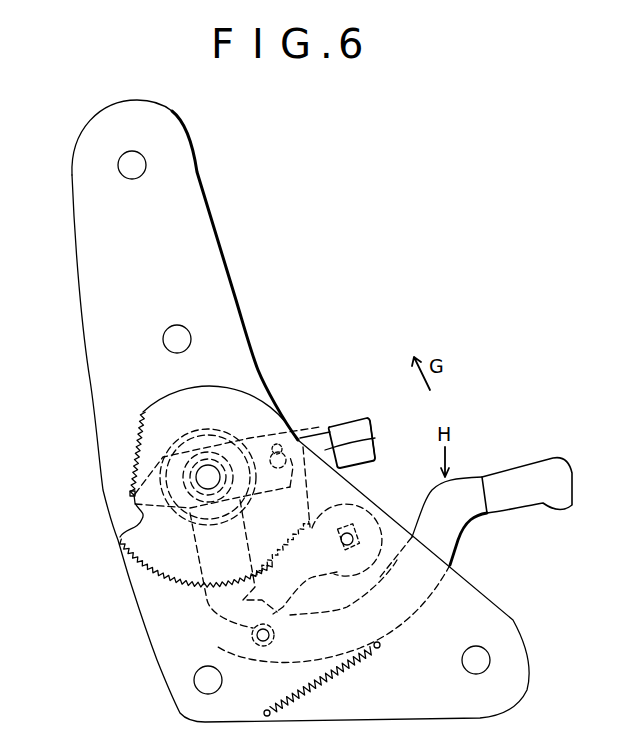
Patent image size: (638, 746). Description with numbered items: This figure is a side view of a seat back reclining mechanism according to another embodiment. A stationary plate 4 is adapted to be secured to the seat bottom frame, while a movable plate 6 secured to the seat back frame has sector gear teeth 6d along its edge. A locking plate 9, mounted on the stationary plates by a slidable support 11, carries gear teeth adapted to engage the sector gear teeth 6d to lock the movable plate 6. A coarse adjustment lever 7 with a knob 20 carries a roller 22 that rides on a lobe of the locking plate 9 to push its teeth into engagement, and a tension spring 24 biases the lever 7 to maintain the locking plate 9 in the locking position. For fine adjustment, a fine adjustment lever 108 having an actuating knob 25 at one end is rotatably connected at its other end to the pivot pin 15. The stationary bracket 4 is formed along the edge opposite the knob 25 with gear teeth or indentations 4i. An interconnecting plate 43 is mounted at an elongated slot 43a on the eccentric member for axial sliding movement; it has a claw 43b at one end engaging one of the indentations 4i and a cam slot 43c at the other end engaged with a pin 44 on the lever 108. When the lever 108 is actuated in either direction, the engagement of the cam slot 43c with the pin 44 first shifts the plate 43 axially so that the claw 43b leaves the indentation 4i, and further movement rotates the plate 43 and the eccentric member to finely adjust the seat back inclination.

The stationary plate 4 is at (170, 657).
The gear teeth or indentations 4i is at (132, 453).
The movable plate 6 is at (213, 266).
The sector gear teeth 6d is at (150, 572).
The coarse adjustment lever 7 is at (463, 530).
The locking plate 9 is at (205, 613).
The slidable support 11 is at (351, 533).
The pivot pin 15 is at (209, 472).
The knob 20 is at (515, 485).
The roller 22 is at (257, 647).
The tension spring 24 is at (330, 690).
The actuating knob 25 is at (376, 454).
The interconnecting plate 43 is at (282, 422).
The elongated slot 43a is at (203, 457).
The claw 43b is at (130, 494).
The cam slot 43c is at (285, 428).
The pin 44 is at (338, 424).
The fine adjustment lever 108 is at (375, 438).